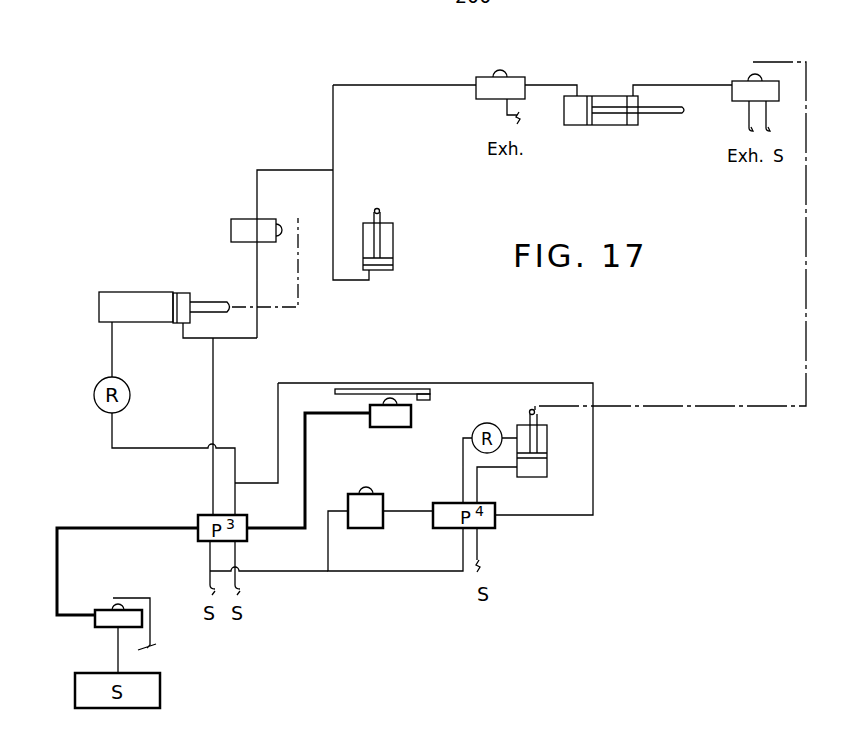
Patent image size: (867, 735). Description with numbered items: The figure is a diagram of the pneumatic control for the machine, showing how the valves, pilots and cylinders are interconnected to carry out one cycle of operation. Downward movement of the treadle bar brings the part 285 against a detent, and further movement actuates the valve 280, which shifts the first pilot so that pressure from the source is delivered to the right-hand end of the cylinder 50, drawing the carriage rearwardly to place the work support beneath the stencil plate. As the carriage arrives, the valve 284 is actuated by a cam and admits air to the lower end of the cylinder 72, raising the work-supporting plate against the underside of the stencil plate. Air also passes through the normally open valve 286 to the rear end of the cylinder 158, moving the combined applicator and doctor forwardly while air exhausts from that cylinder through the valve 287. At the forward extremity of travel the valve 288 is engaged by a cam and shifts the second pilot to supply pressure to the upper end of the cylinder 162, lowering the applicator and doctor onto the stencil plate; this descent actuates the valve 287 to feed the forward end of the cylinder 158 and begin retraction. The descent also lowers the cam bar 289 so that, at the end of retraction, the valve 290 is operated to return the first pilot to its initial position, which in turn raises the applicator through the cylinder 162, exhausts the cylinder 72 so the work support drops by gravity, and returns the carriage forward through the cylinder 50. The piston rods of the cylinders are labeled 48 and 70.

The valve 284 is at (243, 225).
The valve 286 is at (484, 82).
The valve 287 is at (748, 87).
The cylinder 158 is at (613, 125).
The piston rod 70 is at (378, 209).
The cylinder 72 is at (393, 250).
The piston rod 48 is at (208, 303).
The cylinder 50 is at (148, 318).
The cam bar 289 is at (355, 390).
The valve 290 is at (392, 420).
The valve 288 is at (368, 528).
The cylinder 162 is at (547, 440).
The part 285 is at (137, 600).
The valve 280 is at (105, 628).